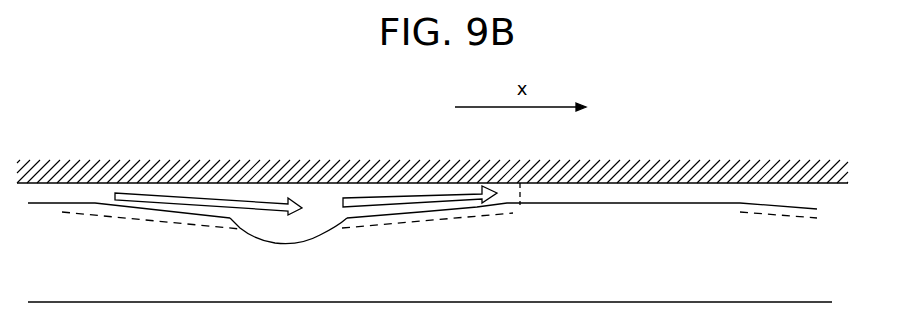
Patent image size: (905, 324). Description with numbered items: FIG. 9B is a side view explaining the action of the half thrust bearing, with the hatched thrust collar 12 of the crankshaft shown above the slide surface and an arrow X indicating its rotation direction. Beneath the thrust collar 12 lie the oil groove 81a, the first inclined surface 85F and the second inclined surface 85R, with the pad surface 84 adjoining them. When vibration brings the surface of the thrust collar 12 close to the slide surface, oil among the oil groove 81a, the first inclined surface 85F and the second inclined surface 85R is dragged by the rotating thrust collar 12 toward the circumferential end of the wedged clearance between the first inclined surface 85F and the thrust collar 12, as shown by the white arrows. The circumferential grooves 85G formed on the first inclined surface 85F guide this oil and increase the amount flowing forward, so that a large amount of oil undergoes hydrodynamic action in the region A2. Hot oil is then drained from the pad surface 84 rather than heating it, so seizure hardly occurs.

The thrust collar 12 is at (825, 184).
The pad surface 84 is at (55, 203).
The oil groove 81a is at (310, 228).
The second inclined surface 85R is at (212, 218).
The first inclined surface 85F is at (382, 218).
The circumferential groove 85G is at (100, 205).
The region A2 is at (513, 210).